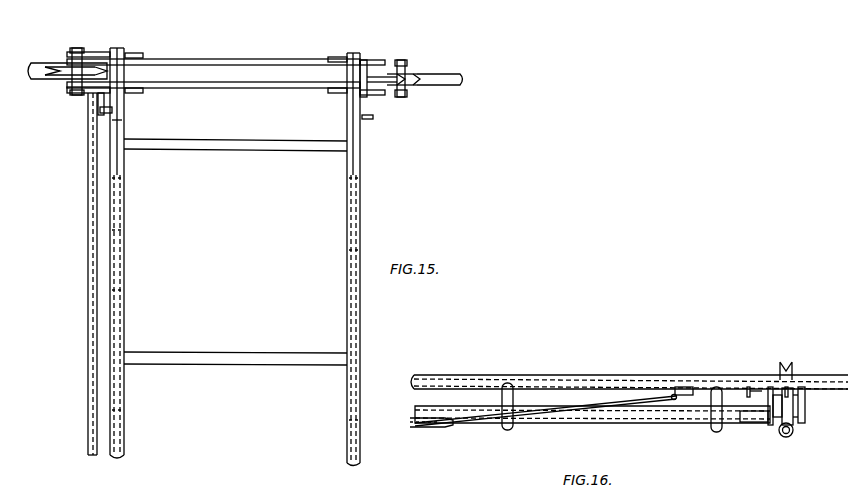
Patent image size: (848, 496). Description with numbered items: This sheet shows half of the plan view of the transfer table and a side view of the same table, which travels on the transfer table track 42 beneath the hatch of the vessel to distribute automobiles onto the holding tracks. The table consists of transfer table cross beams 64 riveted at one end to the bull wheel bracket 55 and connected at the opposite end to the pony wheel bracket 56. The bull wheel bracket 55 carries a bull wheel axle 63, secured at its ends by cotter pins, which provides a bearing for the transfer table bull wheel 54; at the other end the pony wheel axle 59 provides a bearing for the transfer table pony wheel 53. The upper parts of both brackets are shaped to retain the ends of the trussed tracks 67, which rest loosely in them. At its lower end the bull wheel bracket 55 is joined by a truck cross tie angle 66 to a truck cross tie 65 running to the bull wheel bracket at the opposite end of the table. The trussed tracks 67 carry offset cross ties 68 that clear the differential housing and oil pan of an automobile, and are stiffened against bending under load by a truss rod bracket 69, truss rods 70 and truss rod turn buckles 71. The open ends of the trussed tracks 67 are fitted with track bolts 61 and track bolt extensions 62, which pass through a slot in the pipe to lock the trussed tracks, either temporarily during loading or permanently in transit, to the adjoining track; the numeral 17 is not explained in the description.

In FIG. 15, the frame post 17 is at (105, 365).
In FIG. 15, the transfer table track 42 is at (445, 77).
In FIG. 16, the transfer table track 42 is at (783, 438).
In FIG. 15, the transfer table pony wheel 53 is at (413, 72).
In FIG. 15, the transfer table bull wheel 54 is at (53, 62).
In FIG. 15, the bull wheel bracket 55 is at (102, 53).
In FIG. 15, the pony wheel bracket 56 is at (373, 58).
In FIG. 15, the pony wheel axle 59 is at (403, 60).
In FIG. 15, the track bolt 61 is at (117, 110).
In FIG. 15, the track bolt extension 62 is at (100, 122).
In FIG. 15, the bull wheel axle 63 is at (80, 50).
In FIG. 15, the transfer table cross beam 64 is at (227, 88).
In FIG. 15, the truck cross tie 65 is at (88, 230).
In FIG. 15, the truck cross tie angle 66 is at (143, 93).
In FIG. 15, the trussed track 67 is at (126, 234).
In FIG. 15, the cross tie 68 is at (253, 141).
In FIG. 16, the cross tie 68 is at (508, 432).
In FIG. 16, the truss rod bracket 69 is at (687, 398).
In FIG. 16, the truss rod 70 is at (600, 414).
In FIG. 16, the truss rod turn buckle 71 is at (422, 430).